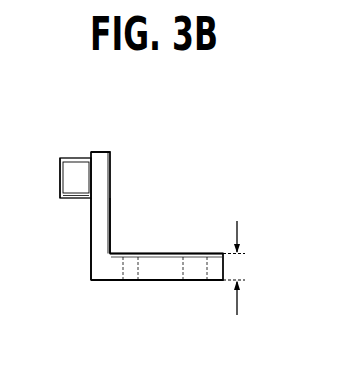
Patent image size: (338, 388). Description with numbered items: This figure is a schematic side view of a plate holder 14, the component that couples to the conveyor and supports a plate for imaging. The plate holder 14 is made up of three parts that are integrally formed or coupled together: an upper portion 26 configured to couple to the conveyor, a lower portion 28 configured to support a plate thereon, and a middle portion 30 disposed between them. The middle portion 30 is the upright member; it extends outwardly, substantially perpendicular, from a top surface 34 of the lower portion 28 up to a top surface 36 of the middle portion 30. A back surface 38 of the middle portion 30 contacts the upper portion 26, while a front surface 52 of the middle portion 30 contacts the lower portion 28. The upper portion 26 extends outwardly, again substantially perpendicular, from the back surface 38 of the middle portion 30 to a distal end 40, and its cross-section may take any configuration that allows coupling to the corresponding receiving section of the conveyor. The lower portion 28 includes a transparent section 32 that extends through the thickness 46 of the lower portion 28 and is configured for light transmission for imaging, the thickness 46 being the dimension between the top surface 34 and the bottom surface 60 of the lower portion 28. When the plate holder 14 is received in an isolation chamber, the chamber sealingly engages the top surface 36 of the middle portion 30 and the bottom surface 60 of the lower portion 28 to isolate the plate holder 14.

The plate holder 14 is at (216, 138).
The upper portion 26 is at (77, 158).
The lower portion 28 is at (207, 253).
The middle portion 30 is at (97, 208).
The transparent section 32 is at (214, 282).
The top surface of the lower portion 34 is at (213, 253).
The top surface of the middle portion 36 is at (100, 152).
The back surface of the middle portion 38 is at (91, 218).
The distal end of the upper portion 40 is at (60, 182).
The thickness of the lower portion 46 is at (237, 265).
The front surface of the middle portion 52 is at (110, 238).
The bottom surface of the lower portion 60 is at (155, 281).